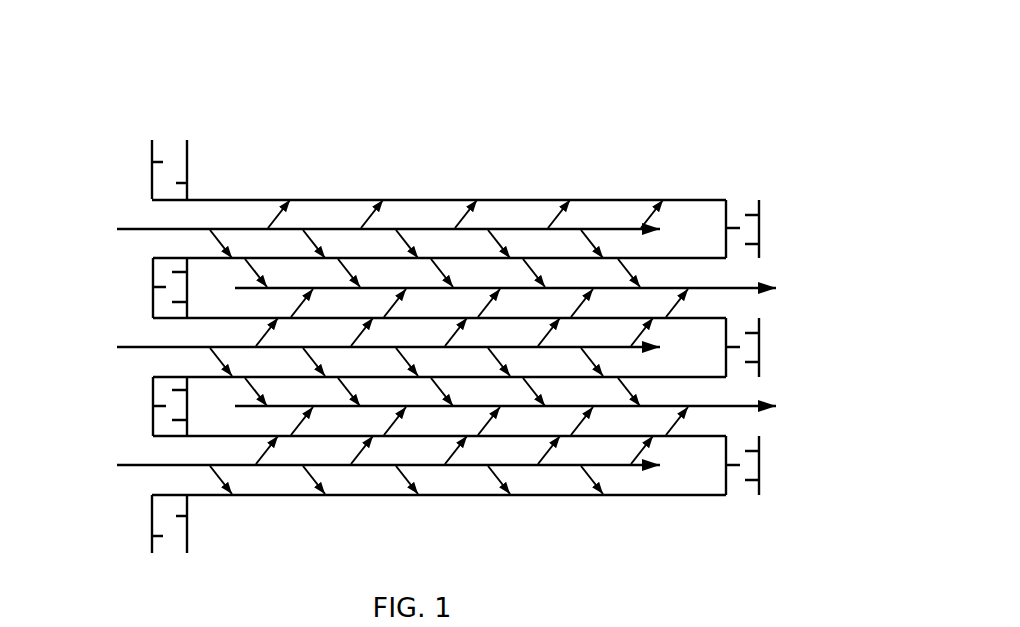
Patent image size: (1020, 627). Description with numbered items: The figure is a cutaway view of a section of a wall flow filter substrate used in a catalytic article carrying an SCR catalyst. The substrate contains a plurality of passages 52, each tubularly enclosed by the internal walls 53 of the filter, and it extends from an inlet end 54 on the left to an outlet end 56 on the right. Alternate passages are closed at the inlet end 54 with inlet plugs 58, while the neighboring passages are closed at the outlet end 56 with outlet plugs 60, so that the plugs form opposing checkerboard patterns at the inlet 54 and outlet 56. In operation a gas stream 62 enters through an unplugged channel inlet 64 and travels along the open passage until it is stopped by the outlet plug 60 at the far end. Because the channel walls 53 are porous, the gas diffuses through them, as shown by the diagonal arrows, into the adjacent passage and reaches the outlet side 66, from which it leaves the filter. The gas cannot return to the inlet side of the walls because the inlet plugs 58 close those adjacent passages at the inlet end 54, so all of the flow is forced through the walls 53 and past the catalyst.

The passages 52 is at (207, 270).
The internal walls 53 is at (450, 258).
The inlet end 54 is at (125, 120).
The outlet end 56 is at (798, 177).
The inlet plugs 58 is at (160, 177).
The outlet plugs 60 is at (762, 229).
The gas stream 62 is at (250, 230).
The unplugged channel inlet 64 is at (174, 225).
The outlet side 66 is at (757, 312).